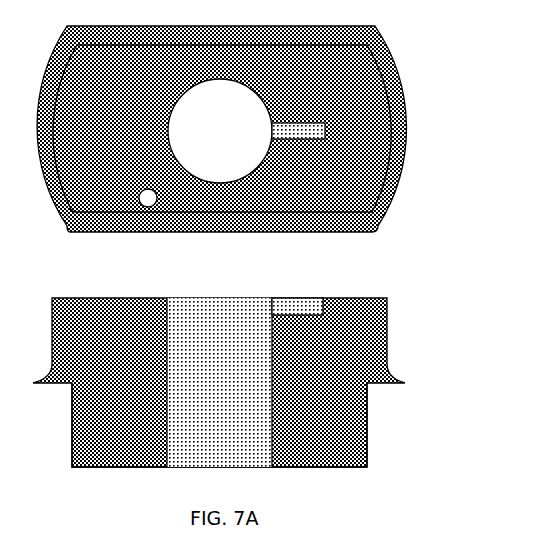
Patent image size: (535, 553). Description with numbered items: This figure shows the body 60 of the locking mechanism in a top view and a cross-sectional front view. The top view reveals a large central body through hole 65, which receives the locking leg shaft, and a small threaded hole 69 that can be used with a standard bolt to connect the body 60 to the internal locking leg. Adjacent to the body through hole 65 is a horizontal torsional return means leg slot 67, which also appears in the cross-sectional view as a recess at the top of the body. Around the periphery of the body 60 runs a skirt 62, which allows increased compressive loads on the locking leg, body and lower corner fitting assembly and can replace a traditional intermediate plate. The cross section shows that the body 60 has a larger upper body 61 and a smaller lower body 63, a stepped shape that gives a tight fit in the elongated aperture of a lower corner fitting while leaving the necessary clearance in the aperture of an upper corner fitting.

The body 60 is at (400, 222).
The upper body 61 is at (330, 178).
The skirt 62 is at (54, 380).
The lower body 63 is at (323, 427).
The body through hole 65 is at (225, 138).
The horizontal torsional return means leg slot 67 is at (292, 141).
The threaded hole 69 is at (148, 200).